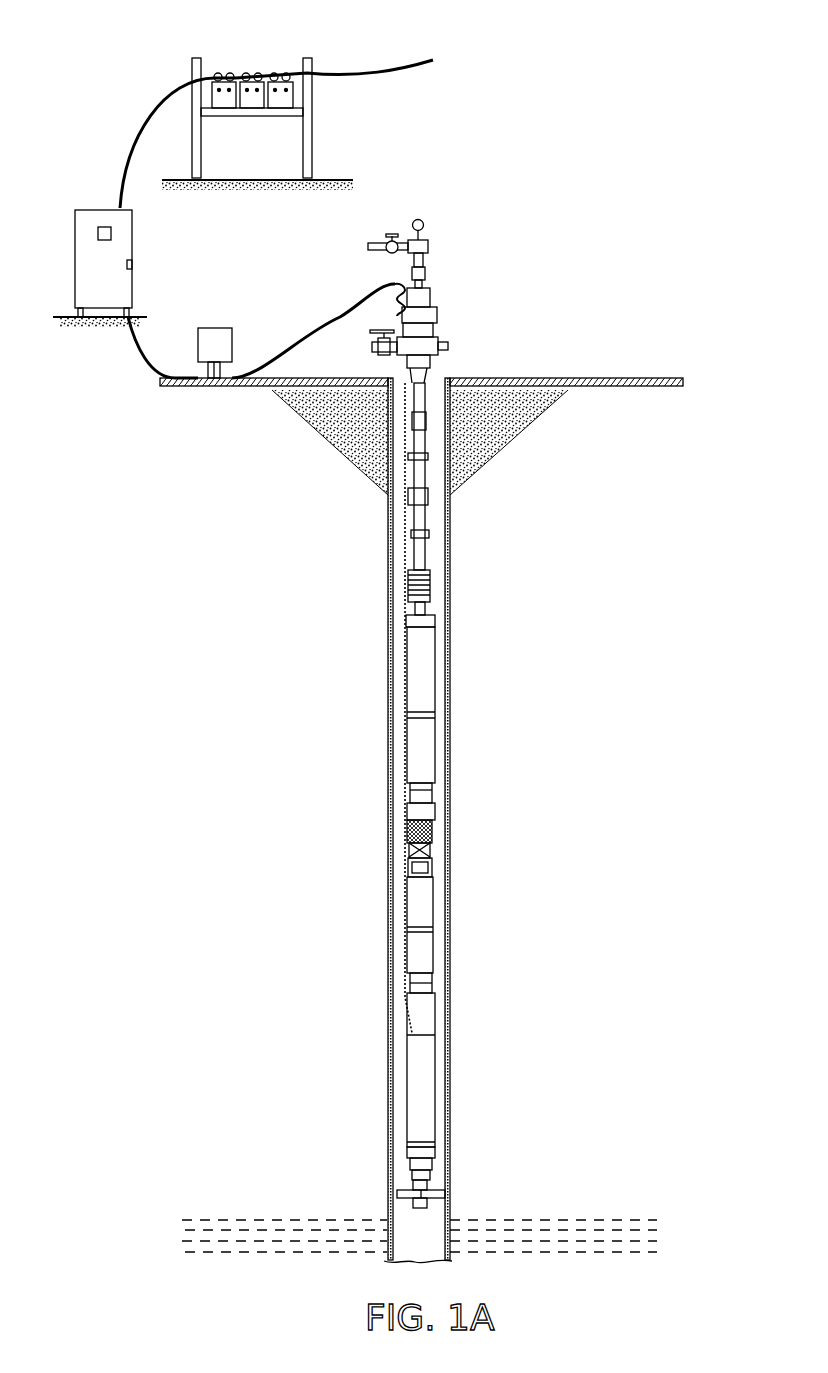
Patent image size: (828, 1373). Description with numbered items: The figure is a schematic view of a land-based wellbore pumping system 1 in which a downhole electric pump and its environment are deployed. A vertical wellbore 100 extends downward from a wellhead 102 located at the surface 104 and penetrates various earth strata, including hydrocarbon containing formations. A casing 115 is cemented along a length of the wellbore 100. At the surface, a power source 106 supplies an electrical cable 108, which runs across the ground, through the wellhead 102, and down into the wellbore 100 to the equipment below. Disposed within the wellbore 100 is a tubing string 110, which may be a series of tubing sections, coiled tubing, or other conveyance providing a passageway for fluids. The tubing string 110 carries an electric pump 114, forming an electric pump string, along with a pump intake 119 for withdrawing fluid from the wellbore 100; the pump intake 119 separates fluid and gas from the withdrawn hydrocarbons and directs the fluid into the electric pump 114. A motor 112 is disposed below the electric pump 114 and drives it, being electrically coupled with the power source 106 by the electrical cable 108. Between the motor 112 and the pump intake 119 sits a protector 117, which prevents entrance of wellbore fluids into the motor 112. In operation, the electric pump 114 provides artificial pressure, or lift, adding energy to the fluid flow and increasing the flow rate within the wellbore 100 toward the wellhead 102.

The wellbore pumping system 1 is at (460, 212).
The wellbore 100 is at (441, 378).
The wellhead 102 is at (437, 293).
The surface 104 is at (653, 377).
The power source 106 is at (220, 52).
The electrical cable 108 is at (318, 340).
The tubing string 110 is at (426, 523).
The motor 112 is at (420, 1087).
The electric pump 114 is at (426, 772).
The casing 115 is at (388, 682).
The protector 117 is at (430, 947).
The pump intake 119 is at (430, 840).